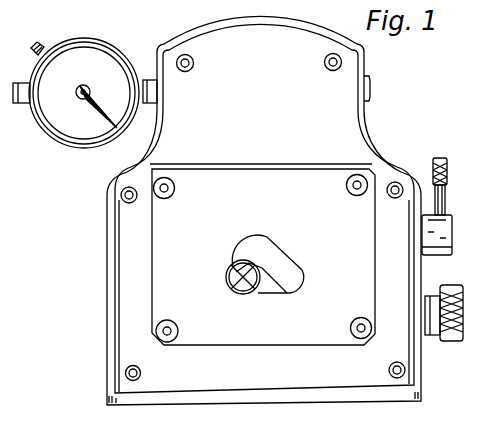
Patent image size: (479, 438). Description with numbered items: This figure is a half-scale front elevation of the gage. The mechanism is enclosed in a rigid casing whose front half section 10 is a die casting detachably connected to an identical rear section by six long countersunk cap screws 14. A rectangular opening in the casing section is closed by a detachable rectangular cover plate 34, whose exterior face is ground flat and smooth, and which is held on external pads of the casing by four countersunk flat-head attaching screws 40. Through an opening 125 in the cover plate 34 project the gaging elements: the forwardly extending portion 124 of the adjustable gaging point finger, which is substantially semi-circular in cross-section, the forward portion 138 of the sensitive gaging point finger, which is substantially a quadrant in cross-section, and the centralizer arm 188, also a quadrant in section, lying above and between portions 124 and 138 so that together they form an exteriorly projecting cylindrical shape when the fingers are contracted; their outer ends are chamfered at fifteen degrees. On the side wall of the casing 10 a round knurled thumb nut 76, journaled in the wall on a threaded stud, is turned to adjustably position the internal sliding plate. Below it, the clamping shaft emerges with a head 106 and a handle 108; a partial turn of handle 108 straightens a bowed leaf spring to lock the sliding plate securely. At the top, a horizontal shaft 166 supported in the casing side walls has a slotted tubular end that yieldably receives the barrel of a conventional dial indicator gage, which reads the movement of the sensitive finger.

The front casing half section 10 is at (367, 121).
The cap screws 14 is at (192, 69).
The front cover plate 34 is at (236, 347).
The cover plate attaching screws 40 is at (175, 193).
The knurled thumb nut 76 is at (447, 345).
The head 106 is at (453, 238).
The handle 108 is at (447, 170).
The forwardly extending portion of adjustable gaging point finger 124 is at (247, 287).
The opening in front cover plate 125 is at (283, 250).
The exteriorly projecting forward portion of sensitive gaging point finger 138 is at (228, 281).
The horizontal shaft 166 is at (367, 91).
The centralizer arm 188 is at (246, 261).